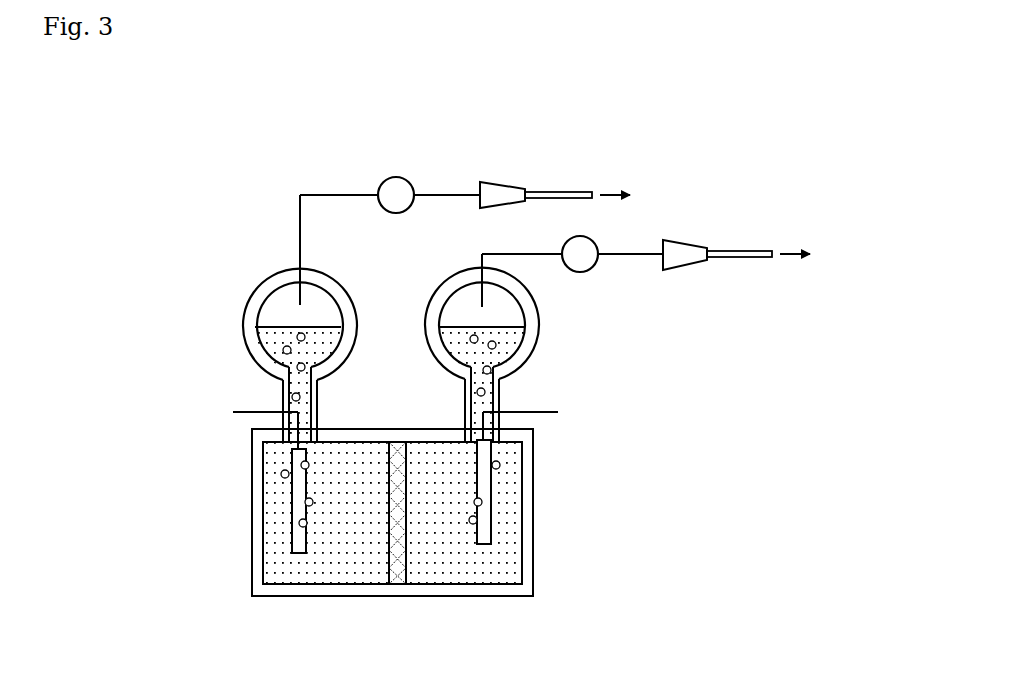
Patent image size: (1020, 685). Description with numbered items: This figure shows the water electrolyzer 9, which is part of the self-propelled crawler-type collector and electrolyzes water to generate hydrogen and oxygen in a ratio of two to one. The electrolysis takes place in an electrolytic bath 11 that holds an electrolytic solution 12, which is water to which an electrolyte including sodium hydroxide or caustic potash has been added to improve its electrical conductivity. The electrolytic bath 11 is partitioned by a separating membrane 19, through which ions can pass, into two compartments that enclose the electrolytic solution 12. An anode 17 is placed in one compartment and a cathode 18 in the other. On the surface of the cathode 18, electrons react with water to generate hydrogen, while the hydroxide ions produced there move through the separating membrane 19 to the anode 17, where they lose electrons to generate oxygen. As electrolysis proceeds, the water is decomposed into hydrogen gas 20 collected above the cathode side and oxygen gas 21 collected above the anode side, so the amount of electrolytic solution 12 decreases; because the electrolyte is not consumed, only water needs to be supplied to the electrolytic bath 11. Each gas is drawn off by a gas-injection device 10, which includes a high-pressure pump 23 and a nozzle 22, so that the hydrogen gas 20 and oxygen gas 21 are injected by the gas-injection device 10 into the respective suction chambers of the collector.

The water electrolyzer 9 is at (128, 292).
The gas-injection device 10 is at (555, 223).
The electrolytic bath 11 is at (533, 483).
The electrolytic solution 12 is at (348, 555).
The anode 17 is at (491, 512).
The cathode 18 is at (292, 512).
The separating membrane 19 is at (405, 568).
The hydrogen gas 20 is at (278, 300).
The oxygen gas 21 is at (460, 308).
The nozzle 22 is at (618, 226).
The high-pressure pump 23 is at (384, 178).